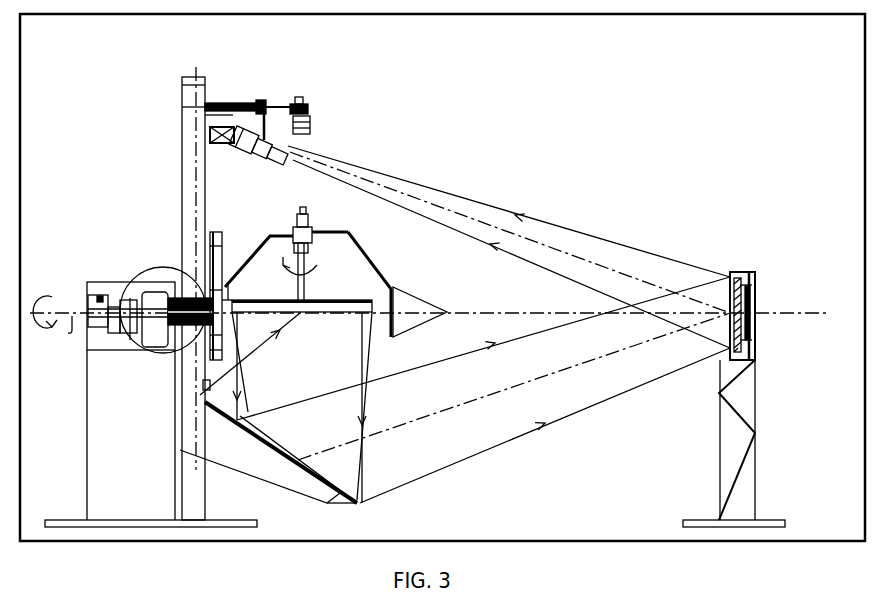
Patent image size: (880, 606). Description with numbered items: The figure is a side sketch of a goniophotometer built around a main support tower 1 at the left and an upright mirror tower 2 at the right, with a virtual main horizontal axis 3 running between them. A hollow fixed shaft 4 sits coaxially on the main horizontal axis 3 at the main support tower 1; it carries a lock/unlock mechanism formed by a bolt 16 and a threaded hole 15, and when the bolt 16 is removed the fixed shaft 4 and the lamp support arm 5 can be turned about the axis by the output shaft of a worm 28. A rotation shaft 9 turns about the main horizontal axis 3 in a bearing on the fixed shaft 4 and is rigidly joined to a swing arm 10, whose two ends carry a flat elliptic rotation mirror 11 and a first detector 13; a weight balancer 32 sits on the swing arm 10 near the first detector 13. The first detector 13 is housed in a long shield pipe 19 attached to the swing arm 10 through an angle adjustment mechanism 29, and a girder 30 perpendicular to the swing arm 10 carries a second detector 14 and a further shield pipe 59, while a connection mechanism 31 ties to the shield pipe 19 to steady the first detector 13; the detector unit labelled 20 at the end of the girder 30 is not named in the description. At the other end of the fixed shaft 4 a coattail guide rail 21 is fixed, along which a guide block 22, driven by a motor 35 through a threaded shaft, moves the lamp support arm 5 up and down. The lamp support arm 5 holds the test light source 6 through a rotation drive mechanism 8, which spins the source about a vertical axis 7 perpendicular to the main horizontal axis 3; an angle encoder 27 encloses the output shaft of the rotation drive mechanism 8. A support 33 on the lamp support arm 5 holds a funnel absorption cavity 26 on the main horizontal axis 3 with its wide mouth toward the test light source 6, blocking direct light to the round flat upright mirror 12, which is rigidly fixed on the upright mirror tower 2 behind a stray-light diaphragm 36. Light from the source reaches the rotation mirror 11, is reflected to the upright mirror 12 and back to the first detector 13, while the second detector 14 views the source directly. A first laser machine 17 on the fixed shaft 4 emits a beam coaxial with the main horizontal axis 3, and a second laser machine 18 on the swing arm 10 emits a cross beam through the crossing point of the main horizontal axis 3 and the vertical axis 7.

The main support tower 1 is at (110, 497).
The upright mirror tower 2 is at (755, 477).
The main horizontal axis 3 is at (76, 335).
The fixed shaft 4 is at (170, 298).
The lamp support arm 5 is at (270, 238).
The test light source 6 is at (317, 315).
The vertical axis 7 is at (307, 253).
The rotation drive mechanism 8 is at (317, 232).
The rotation shaft 9 is at (163, 333).
The swing arm 10 is at (182, 200).
The rotation mirror 11 is at (327, 498).
The upright mirror 12 is at (786, 302).
The first detector 13 is at (240, 127).
The second detector 14 is at (303, 100).
The threaded hole 15 is at (117, 317).
The bolt 16 is at (108, 310).
The first laser machine 17 is at (237, 378).
The second laser machine 18 is at (213, 397).
The shield pipe 19 is at (258, 157).
The illumination unit 20 is at (310, 130).
The guide rail 21 is at (217, 232).
The guide block 22 is at (225, 320).
The funnel absorption cavity 26 is at (427, 300).
The angle encoder 27 is at (297, 268).
The worm 28 is at (98, 295).
The angle adjustment mechanism 29 is at (210, 130).
The girder 30 is at (274, 85).
The connection mechanism 31 is at (267, 105).
The weight balancer 32 is at (197, 82).
The support of the funnel absorption cavity 33 is at (419, 249).
The motor 35 is at (207, 372).
The diaphragm 36 is at (733, 275).
The shield pipe 59 is at (307, 110).